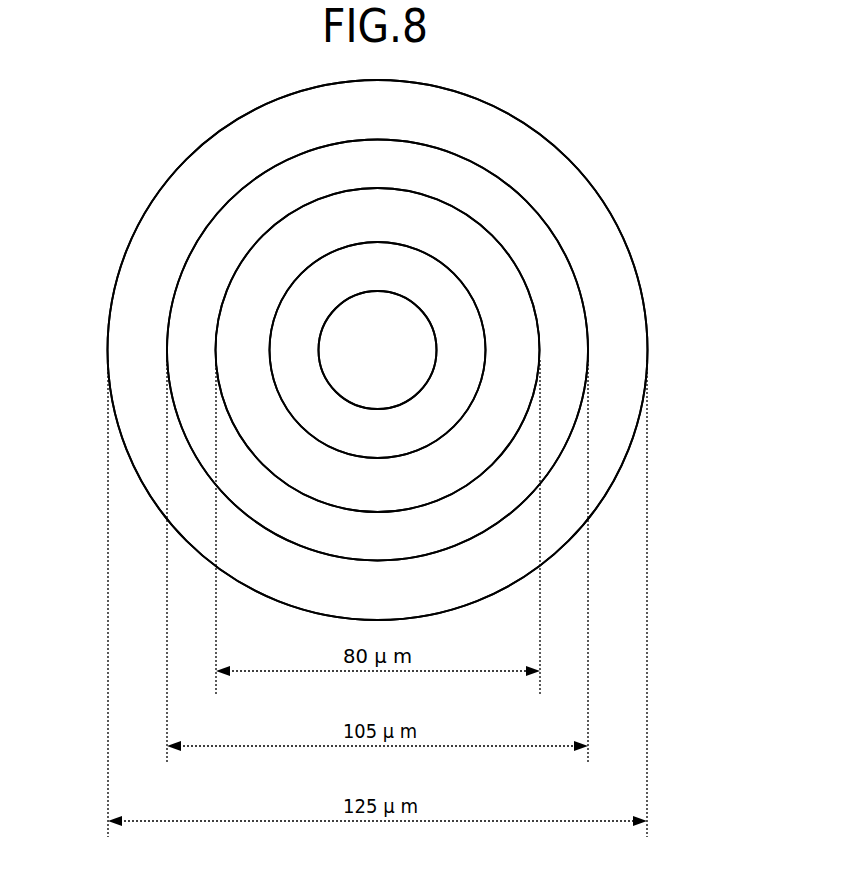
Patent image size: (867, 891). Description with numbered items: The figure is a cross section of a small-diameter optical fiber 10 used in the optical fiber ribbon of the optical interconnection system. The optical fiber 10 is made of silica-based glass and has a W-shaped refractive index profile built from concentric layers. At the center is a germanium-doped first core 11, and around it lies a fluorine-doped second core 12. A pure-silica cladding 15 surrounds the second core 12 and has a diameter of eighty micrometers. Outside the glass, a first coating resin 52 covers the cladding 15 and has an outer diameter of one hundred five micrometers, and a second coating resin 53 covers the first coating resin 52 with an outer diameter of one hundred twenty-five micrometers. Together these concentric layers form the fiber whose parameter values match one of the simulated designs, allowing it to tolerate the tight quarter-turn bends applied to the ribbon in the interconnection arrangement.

The optical fiber 10 is at (563, 157).
The first core 11 is at (405, 362).
The second core 12 is at (455, 368).
The cladding 15 is at (512, 335).
The first coating resin 52 is at (553, 288).
The second coating resin 53 is at (587, 224).